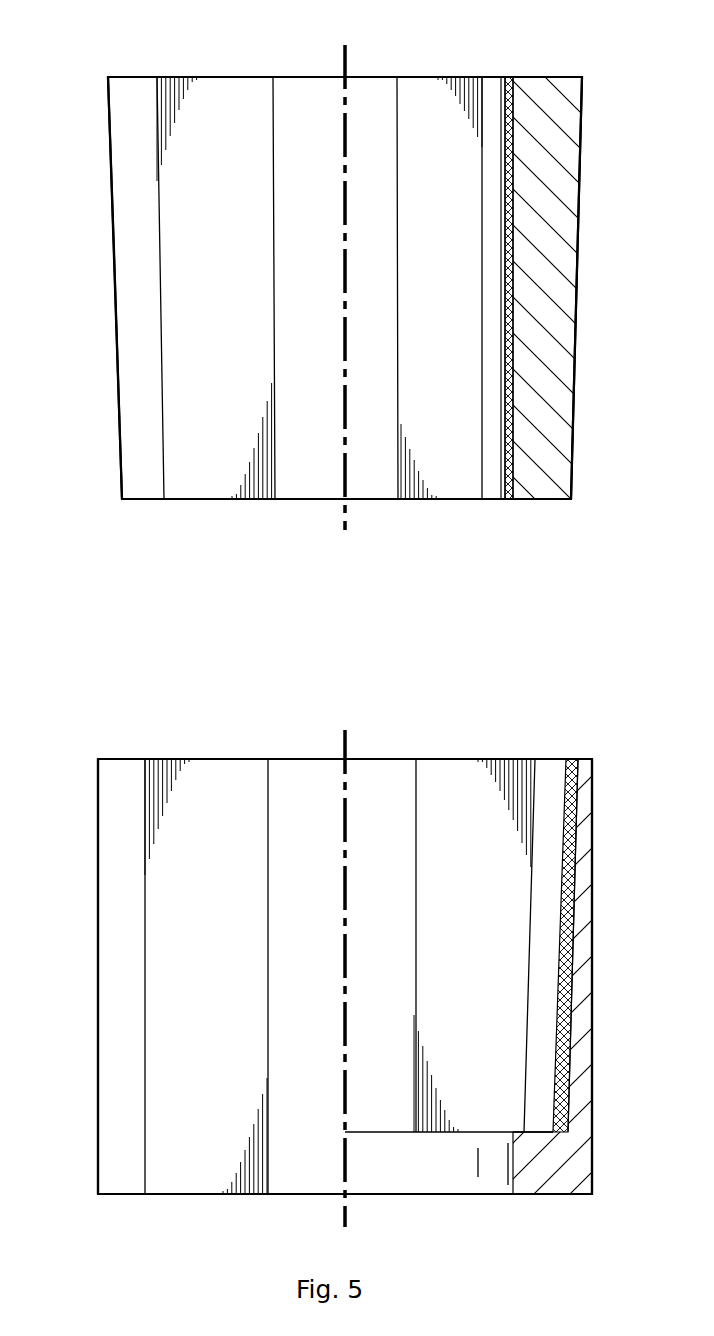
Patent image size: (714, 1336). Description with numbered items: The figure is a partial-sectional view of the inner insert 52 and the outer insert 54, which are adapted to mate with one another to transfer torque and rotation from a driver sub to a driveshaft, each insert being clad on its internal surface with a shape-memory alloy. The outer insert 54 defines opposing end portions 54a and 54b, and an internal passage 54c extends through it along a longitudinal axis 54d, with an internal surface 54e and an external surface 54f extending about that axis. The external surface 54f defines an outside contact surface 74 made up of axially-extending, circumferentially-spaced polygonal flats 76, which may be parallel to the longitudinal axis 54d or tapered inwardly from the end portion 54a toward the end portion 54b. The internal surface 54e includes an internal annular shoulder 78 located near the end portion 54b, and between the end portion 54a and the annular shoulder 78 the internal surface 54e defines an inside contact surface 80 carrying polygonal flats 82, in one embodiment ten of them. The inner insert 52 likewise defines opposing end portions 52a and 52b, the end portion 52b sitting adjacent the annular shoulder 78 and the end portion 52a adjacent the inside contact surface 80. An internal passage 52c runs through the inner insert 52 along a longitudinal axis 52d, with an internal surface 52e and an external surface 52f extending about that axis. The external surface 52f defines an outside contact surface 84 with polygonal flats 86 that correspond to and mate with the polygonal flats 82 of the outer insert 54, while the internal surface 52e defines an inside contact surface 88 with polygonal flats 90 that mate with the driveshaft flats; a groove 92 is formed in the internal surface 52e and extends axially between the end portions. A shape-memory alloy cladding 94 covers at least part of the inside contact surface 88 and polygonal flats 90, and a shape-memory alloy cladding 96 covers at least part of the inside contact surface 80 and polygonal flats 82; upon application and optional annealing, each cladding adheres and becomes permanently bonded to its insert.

The inner insert 52 is at (143, 77).
The end portion 52a is at (108, 91).
The end portion 52b is at (121, 493).
The internal passage 52c is at (375, 93).
The longitudinal axis 52d is at (343, 522).
The internal surface 52e is at (505, 102).
The external surface 52f is at (581, 118).
The polygonal flats 86 is at (213, 100).
The polygonal flats 90 is at (496, 206).
The groove 92 is at (505, 174).
The inside contact surface 88 is at (500, 266).
The shape-memory alloy cladding 94 is at (512, 345).
The outside contact surface 84 is at (575, 398).
The outer insert 54 is at (132, 759).
The end portion 54a is at (98, 772).
The end portion 54b is at (97, 1188).
The internal passage 54c is at (375, 773).
The longitudinal axis 54d is at (344, 1220).
The internal surface 54e is at (570, 782).
The external surface 54f is at (593, 838).
The polygonal flats 76 is at (213, 783).
The polygonal flats 82 is at (462, 780).
The shape-memory alloy cladding 96 is at (568, 945).
The outside contact surface 74 is at (593, 1013).
The inside contact surface 80 is at (560, 1090).
The internal annular shoulder 78 is at (545, 1130).